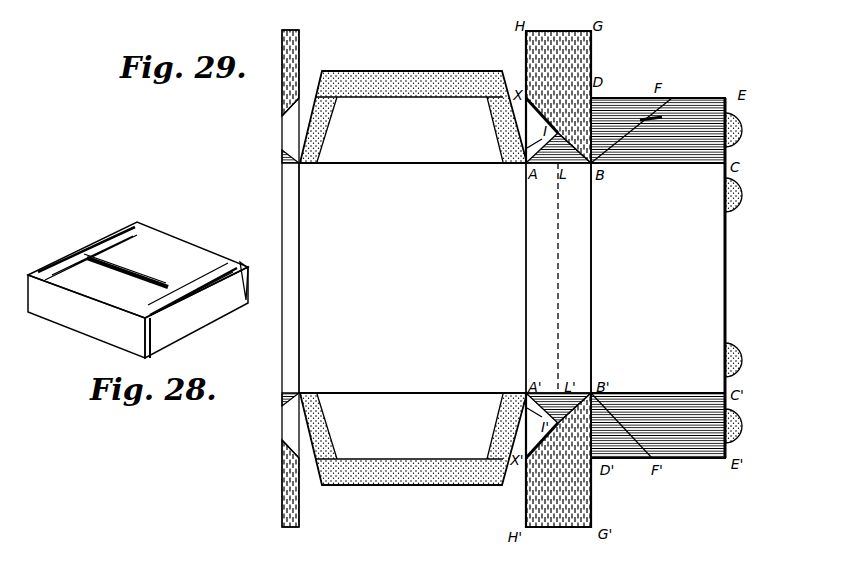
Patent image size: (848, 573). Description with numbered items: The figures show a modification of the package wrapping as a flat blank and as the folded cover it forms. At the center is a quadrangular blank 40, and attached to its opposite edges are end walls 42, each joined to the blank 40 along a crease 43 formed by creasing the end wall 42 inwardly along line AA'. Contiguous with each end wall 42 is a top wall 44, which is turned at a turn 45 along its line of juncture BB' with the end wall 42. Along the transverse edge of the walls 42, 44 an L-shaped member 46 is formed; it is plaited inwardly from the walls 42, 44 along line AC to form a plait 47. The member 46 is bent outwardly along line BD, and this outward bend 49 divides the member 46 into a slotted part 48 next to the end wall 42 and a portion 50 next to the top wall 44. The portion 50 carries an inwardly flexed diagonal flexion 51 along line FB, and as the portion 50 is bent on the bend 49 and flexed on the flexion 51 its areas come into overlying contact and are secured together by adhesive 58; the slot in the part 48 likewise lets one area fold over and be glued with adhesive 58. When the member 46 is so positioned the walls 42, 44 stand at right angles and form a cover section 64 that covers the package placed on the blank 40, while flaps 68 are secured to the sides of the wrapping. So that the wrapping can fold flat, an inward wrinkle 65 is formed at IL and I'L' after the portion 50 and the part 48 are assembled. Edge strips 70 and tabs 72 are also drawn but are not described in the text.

In FIG. 29, the quadrangular blank 40 is at (412, 278).
In FIG. 29, the end wall 42 is at (292, 328).
In FIG. 28, the end wall 42 is at (86, 316).
In FIG. 29, the crease 43 is at (525, 323).
In FIG. 28, the crease 43 is at (75, 332).
In FIG. 29, the top wall 44 is at (658, 278).
In FIG. 28, the top wall 44 is at (138, 270).
In FIG. 29, the turn 45 is at (593, 257).
In FIG. 28, the turn 45 is at (55, 292).
In FIG. 29, the L-shaped member 46 is at (692, 470).
In FIG. 29, the plait 47 is at (656, 163).
In FIG. 29, the slotted part 48 is at (523, 165).
In FIG. 29, the outward bend 49 is at (593, 160).
In FIG. 29, the portion 50 is at (704, 108).
In FIG. 29, the diagonal flexion 51 is at (672, 98).
In FIG. 29, the adhesive 58 is at (628, 146).
In FIG. 28, the cover section 64 is at (210, 250).
In FIG. 29, the inward wrinkle 65 is at (572, 160).
In FIG. 29, the flap 68 is at (413, 278).
In FIG. 28, the flap 68 is at (76, 254).
In FIG. 29, the glue strip 70 is at (397, 72).
In FIG. 29, the locking tab 72 is at (741, 194).